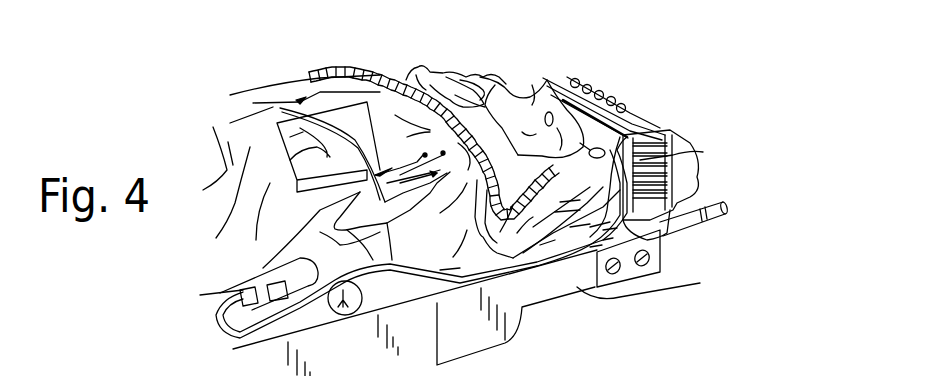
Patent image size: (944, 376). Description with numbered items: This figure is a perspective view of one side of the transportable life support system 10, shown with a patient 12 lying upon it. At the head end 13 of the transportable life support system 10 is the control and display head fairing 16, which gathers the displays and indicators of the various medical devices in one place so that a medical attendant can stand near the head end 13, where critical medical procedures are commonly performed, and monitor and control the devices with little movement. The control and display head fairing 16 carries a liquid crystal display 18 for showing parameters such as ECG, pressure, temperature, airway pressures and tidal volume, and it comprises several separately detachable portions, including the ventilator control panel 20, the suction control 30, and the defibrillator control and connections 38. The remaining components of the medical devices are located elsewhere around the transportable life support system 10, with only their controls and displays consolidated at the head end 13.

The transportable life support system 10 is at (503, 343).
The patient 12 is at (275, 85).
The head end 13 is at (680, 290).
The control and display head fairing 16 is at (665, 148).
The liquid crystal display 18 is at (597, 100).
The ventilator control panel 20 is at (625, 112).
The suction control 30 is at (541, 78).
The defibrillator control and connections 38 is at (699, 155).